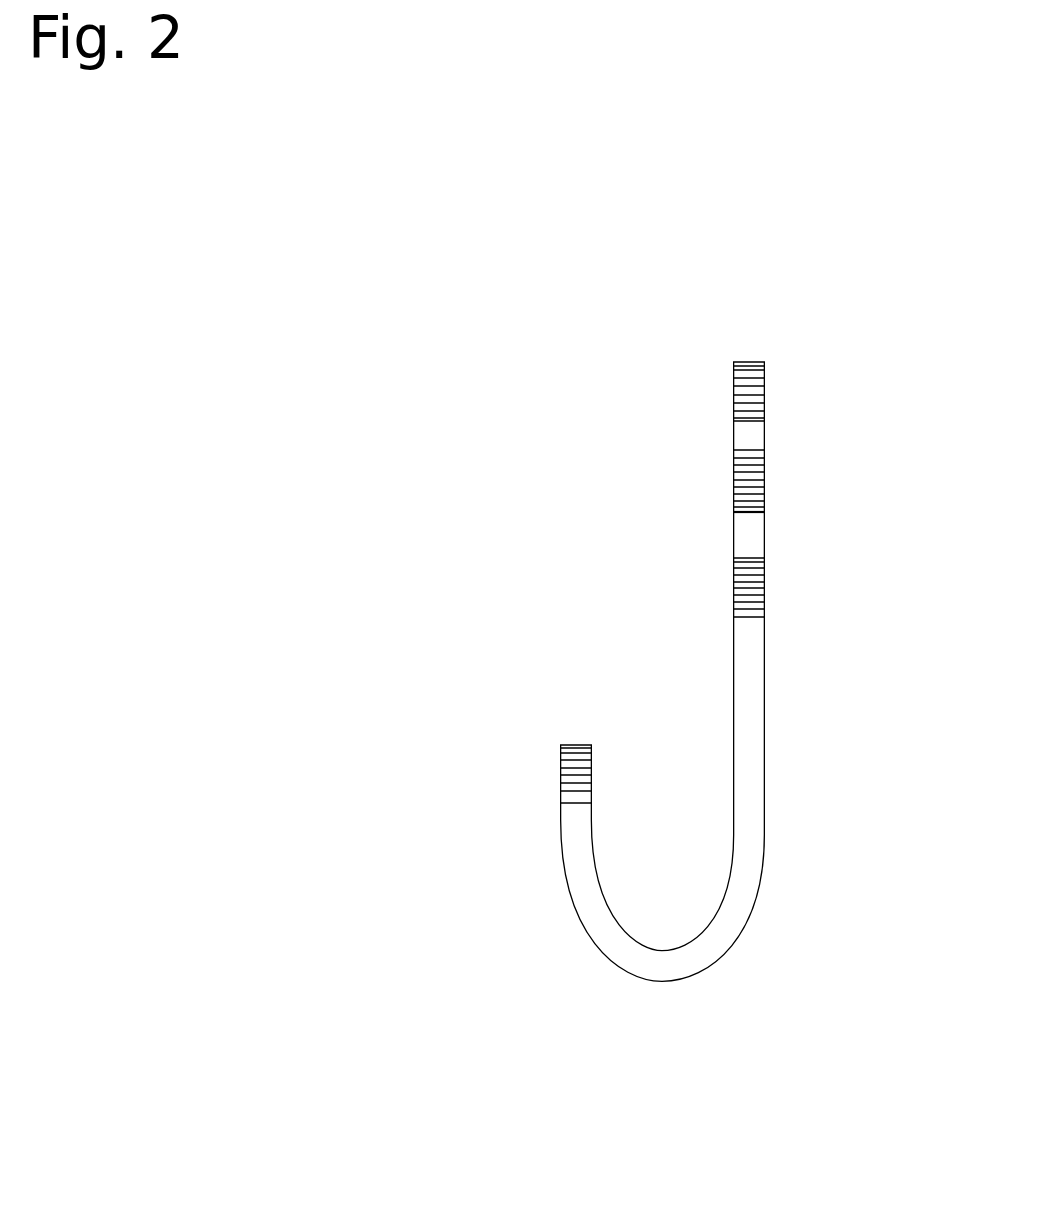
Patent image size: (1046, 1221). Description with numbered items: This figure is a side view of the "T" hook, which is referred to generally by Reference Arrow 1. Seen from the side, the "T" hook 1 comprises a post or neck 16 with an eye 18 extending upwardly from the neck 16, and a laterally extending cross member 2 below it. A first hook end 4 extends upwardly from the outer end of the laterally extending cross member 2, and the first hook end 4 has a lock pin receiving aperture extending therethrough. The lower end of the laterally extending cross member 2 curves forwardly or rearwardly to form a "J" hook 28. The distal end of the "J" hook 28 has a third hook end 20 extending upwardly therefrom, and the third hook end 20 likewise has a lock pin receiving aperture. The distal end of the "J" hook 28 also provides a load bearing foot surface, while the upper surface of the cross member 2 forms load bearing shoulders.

The "T" hook 1 is at (653, 687).
The laterally extending cross member 2 is at (748, 720).
The first hook end 4 is at (748, 590).
The neck 16 is at (748, 532).
The eye 18 is at (748, 437).
The third hook end 20 is at (575, 824).
The "J" hook 28 is at (602, 926).